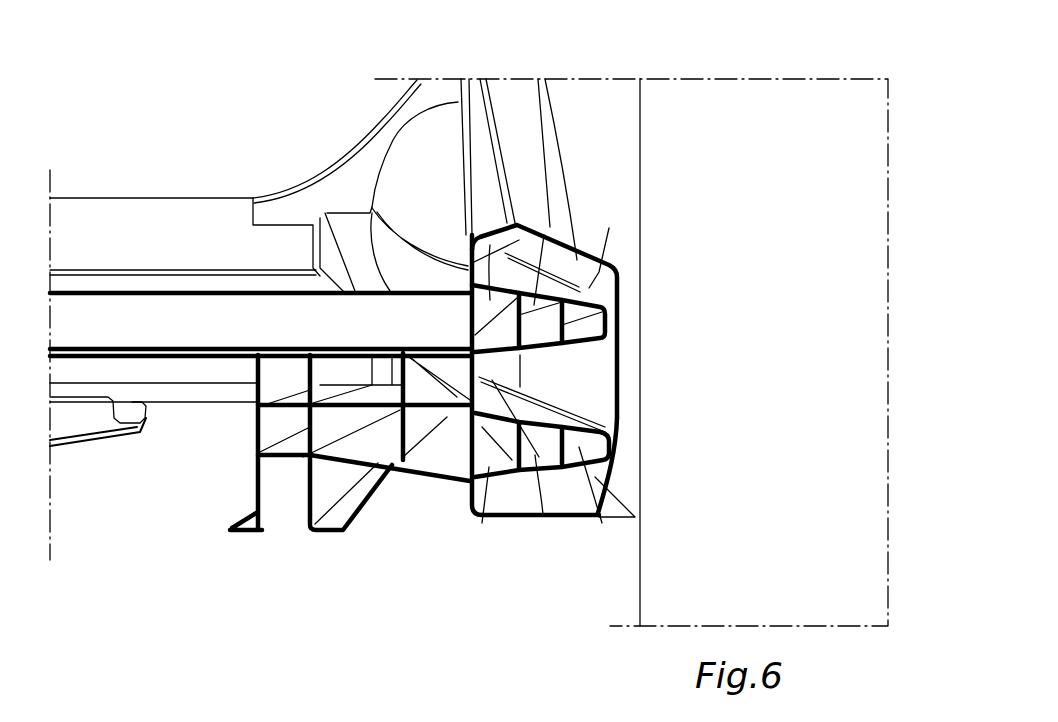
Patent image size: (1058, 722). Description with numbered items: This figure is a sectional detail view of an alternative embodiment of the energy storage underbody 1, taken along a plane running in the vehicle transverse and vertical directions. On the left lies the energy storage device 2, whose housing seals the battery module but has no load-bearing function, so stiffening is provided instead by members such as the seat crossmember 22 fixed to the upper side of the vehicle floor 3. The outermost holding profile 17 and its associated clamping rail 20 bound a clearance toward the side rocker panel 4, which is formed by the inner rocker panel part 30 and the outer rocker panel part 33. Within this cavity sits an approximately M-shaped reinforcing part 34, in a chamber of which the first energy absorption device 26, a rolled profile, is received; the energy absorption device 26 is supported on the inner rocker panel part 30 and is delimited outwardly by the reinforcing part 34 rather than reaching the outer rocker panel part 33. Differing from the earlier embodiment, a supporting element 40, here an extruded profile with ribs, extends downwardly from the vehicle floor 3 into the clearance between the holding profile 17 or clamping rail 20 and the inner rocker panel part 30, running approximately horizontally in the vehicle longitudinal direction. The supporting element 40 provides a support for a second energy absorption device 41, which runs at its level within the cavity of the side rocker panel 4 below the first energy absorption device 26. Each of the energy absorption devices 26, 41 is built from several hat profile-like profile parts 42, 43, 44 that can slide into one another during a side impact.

The underbody 1 is at (586, 88).
The energy storage device 2 is at (127, 464).
The vehicle floor 3 is at (233, 352).
The side rocker panel 4 is at (527, 548).
The holding profile 17 is at (257, 397).
The clamping rail 20 is at (237, 457).
The seat crossmember 22 is at (190, 300).
The energy absorption device 26 is at (632, 325).
The inner rocker panel part 30 is at (460, 465).
The outer rocker panel part 33 is at (623, 418).
The reinforcing part 34 is at (857, 195).
The supporting element 40 is at (395, 489).
The energy absorption device 41 is at (632, 453).
The profile part 42 is at (508, 225).
The profile part 43 is at (555, 233).
The profile part 44 is at (597, 290).